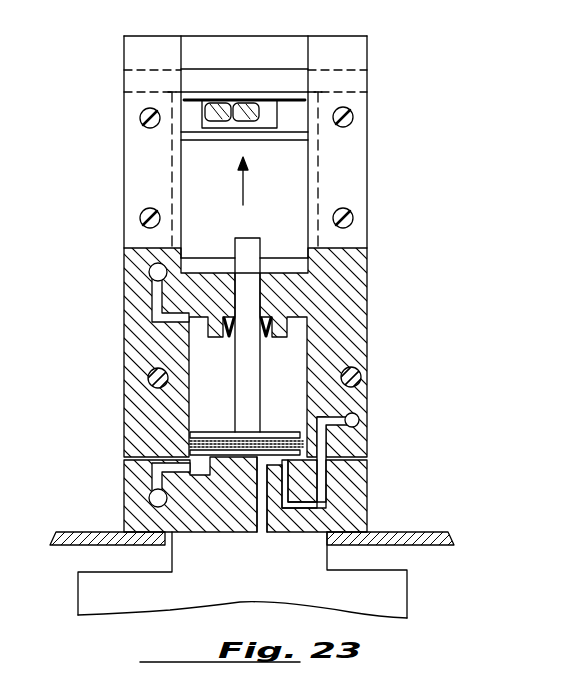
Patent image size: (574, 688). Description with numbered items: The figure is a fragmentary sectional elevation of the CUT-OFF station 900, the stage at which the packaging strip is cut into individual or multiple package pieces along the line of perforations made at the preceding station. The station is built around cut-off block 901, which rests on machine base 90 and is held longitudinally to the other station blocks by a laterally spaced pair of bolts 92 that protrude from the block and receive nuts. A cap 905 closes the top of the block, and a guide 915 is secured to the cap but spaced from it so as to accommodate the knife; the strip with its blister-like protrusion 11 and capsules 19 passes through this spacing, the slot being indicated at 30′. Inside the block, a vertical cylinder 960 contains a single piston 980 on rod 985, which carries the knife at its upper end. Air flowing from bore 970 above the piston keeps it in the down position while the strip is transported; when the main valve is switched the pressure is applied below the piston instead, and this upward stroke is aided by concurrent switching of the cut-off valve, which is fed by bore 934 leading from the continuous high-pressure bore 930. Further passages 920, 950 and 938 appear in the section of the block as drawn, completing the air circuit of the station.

The CUT-OFF station 900 is at (388, 172).
The cap 905 is at (265, 45).
The guide 915 is at (368, 128).
The slot 30′ is at (293, 97).
The capsule 19 is at (222, 118).
The blister-like protrusion 11 is at (270, 128).
The cut-off block 901 is at (348, 280).
The cylinder 960 is at (305, 343).
The bore 970 is at (150, 272).
The bolt hole 920 is at (146, 375).
The bolt 92 is at (146, 383).
The rod 985 is at (247, 356).
The piston 980 is at (275, 440).
The continuous high-pressure bore 930 is at (360, 418).
The bore 934 is at (323, 480).
The lower fluid passage 950 is at (148, 497).
The outlet passage 938 is at (259, 533).
The machine base 90 is at (433, 530).